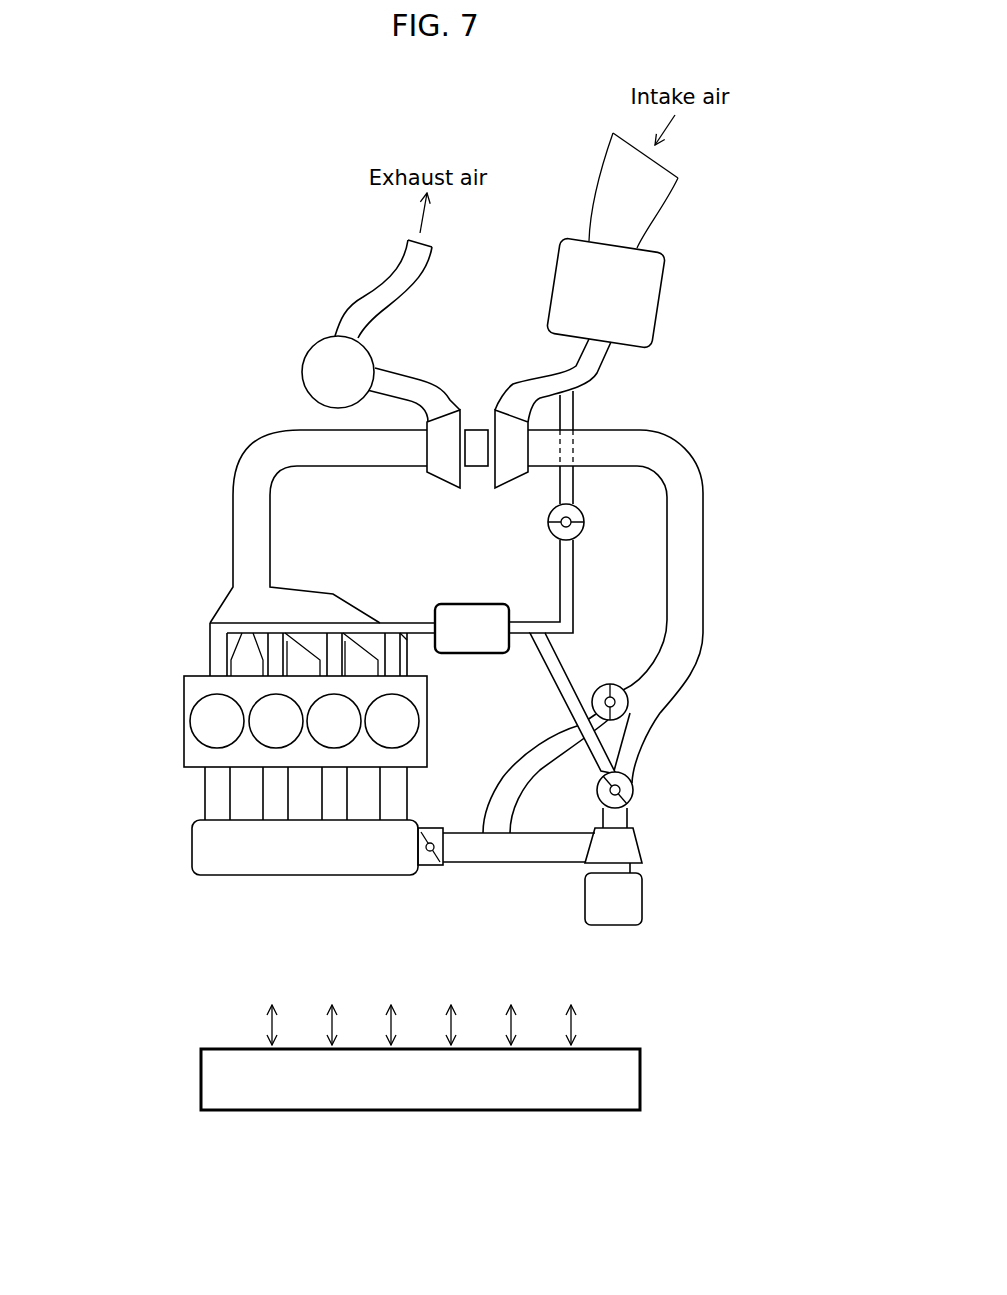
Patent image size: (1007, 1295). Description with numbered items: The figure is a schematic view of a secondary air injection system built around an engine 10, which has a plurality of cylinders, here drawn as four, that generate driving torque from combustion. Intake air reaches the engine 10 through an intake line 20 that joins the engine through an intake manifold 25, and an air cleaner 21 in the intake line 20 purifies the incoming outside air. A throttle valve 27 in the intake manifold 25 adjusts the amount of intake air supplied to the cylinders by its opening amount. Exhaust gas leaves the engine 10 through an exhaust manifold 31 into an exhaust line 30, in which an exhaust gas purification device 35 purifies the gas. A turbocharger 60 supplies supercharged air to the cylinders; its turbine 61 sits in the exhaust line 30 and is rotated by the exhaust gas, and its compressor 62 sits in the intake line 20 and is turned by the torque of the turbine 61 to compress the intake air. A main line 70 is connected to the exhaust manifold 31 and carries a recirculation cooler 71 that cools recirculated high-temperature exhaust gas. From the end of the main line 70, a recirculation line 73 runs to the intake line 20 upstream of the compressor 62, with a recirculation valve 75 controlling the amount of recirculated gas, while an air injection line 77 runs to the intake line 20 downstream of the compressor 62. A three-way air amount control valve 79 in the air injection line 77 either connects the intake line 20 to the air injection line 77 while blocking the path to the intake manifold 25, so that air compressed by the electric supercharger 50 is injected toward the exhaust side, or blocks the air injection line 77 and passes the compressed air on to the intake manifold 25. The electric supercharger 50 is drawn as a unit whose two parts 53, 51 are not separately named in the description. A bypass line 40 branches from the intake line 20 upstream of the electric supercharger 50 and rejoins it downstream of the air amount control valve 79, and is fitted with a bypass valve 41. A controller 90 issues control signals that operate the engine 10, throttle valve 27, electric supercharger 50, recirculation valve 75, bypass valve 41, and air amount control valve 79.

The engine 10 is at (176, 741).
The intake line 20 is at (600, 374).
The air cleaner 21 is at (659, 299).
The intake manifold 25 is at (310, 876).
The throttle valve 27 is at (431, 866).
The exhaust line 30 is at (378, 287).
The exhaust manifold 31 is at (307, 591).
The exhaust gas purification device 35 is at (303, 370).
The bypass line 40 is at (500, 776).
The bypass valve 41 is at (632, 702).
The electric supercharger 50 is at (600, 876).
The fuel tank 51 is at (649, 899).
The fuel pump 53 is at (644, 848).
The turbocharger 60 is at (477, 490).
The turbine 61 is at (443, 482).
The compressor 62 is at (511, 472).
The main line 70 is at (391, 622).
The recirculation cooler 71 is at (466, 654).
The recirculation line 73 is at (574, 577).
The recirculation valve 75 is at (582, 512).
The air injection line 77 is at (553, 678).
The three-way air amount control valve 79 is at (636, 792).
The controller 90 is at (201, 1075).